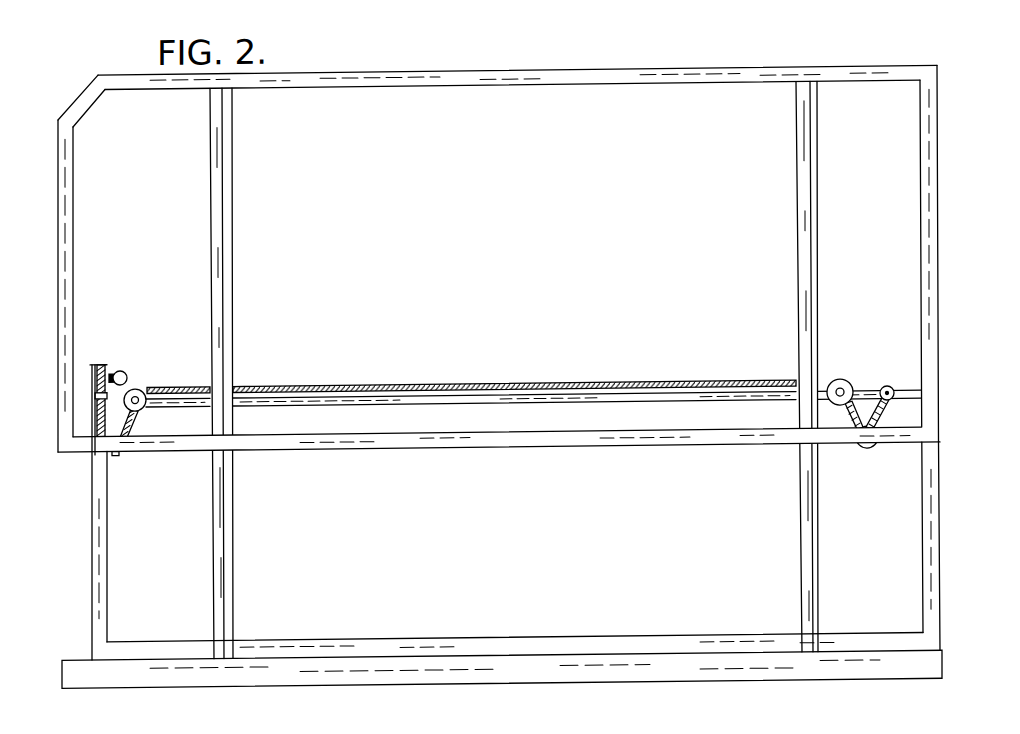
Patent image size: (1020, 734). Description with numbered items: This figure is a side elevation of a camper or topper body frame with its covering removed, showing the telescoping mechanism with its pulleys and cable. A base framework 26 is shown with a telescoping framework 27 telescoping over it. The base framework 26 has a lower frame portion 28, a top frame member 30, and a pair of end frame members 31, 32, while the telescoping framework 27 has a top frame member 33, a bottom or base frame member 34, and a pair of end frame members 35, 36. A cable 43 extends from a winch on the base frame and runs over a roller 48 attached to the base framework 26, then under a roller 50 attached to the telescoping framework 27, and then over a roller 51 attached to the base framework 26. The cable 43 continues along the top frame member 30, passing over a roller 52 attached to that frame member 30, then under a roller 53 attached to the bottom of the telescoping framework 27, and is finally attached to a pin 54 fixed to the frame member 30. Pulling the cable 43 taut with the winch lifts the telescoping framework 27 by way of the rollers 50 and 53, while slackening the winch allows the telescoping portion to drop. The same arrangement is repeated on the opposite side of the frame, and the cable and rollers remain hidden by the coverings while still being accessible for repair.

The base framework 26 is at (84, 583).
The telescoping framework 27 is at (95, 80).
The lower frame portion 28 is at (372, 669).
The top frame member 30 is at (405, 406).
The end frame member 31 is at (98, 478).
The end frame member 32 is at (925, 476).
The top frame member 33 is at (578, 80).
The bottom frame member 34 is at (627, 445).
The end frame member 35 is at (66, 300).
The end frame member 36 is at (921, 313).
The cable 43 is at (552, 391).
The roller 48 is at (105, 368).
The roller 50 is at (117, 456).
The roller 51 is at (133, 393).
The roller 52 is at (858, 376).
The roller 53 is at (866, 458).
The pin 54 is at (914, 380).